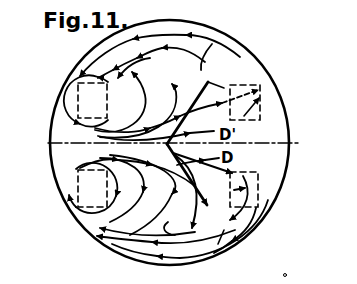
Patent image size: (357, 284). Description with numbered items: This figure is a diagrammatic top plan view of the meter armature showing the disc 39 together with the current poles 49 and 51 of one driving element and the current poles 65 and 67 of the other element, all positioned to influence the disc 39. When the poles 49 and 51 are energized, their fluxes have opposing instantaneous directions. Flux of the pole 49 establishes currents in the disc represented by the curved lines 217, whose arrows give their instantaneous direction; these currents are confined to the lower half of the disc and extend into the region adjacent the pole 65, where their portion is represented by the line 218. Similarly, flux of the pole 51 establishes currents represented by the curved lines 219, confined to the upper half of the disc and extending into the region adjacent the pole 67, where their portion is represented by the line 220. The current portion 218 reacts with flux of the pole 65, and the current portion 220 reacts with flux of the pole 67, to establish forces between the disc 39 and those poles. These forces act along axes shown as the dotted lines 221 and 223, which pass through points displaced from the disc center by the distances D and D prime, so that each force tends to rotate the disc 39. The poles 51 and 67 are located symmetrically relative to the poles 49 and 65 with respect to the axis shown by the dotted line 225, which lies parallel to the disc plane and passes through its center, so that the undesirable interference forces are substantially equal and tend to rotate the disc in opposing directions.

The disc 39 is at (263, 63).
The axis 225 is at (283, 150).
The current pole 51 is at (78, 100).
The current pole 49 is at (78, 190).
The curved lines 219 is at (167, 61).
The line 220 is at (260, 112).
The axis 223 is at (226, 84).
The current pole 67 is at (229, 120).
The curved lines 217 is at (166, 225).
The axis 221 is at (201, 194).
The current pole 65 is at (259, 183).
The line 218 is at (256, 204).